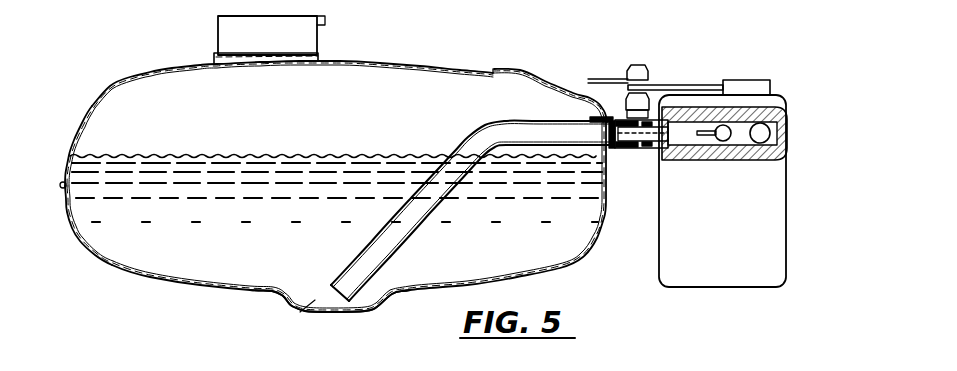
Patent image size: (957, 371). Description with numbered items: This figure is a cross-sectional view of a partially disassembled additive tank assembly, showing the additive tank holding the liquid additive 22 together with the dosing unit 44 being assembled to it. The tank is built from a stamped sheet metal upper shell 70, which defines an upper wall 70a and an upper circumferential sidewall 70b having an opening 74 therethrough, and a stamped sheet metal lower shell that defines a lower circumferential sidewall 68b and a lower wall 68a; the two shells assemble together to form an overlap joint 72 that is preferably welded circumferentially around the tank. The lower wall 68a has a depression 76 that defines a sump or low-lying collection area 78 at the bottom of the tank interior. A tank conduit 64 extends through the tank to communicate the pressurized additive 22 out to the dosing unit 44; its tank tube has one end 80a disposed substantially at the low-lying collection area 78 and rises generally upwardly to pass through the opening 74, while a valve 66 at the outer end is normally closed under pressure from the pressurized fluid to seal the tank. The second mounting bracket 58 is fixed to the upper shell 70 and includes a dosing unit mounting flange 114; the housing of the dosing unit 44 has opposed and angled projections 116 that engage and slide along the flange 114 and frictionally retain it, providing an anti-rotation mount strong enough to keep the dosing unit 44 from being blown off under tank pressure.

The additive 22 is at (509, 261).
The dosing unit 44 is at (754, 47).
The second mounting bracket 58 is at (603, 79).
The tank conduit 64 is at (584, 101).
The valve 66 is at (634, 162).
The lower wall 68a is at (190, 285).
The lower circumferential sidewall 68b is at (66, 212).
The upper shell 70 is at (100, 96).
The upper wall 70a is at (172, 66).
The upper circumferential sidewall 70b is at (84, 120).
The overlap joint 72 is at (61, 184).
The opening 74 is at (590, 118).
The depression 76 is at (372, 310).
The low-lying collection area 78 is at (308, 308).
The one end of tank tube 80a is at (328, 297).
The dosing unit mounting flange 114 is at (668, 84).
The projections 116 is at (780, 71).